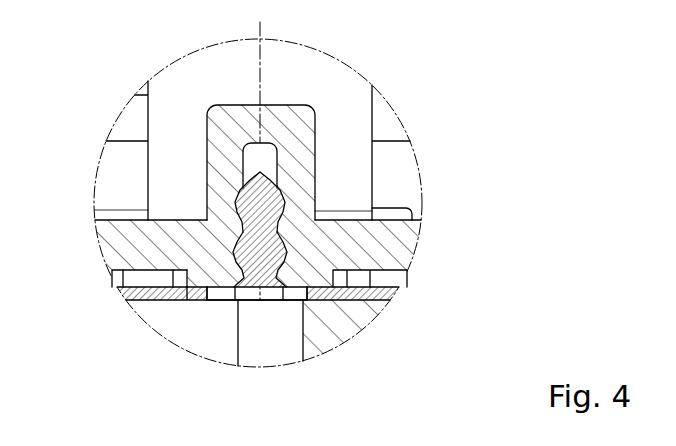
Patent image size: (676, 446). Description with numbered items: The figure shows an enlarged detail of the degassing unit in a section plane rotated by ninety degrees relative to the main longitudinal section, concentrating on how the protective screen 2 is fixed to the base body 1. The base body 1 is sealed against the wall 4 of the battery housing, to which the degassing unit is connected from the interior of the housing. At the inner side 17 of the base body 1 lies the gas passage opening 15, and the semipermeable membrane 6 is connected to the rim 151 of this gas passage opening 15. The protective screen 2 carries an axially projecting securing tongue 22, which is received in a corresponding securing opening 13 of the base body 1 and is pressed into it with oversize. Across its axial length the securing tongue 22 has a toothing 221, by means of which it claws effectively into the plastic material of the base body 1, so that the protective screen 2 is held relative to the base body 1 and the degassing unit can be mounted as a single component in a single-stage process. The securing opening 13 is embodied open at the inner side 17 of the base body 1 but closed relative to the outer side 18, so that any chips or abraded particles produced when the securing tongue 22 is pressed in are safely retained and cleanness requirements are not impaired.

The base body 1 is at (416, 241).
The protective screen 2 is at (216, 309).
The wall of the battery housing 4 is at (333, 350).
The semipermeable membrane 6 is at (181, 297).
The securing opening 13 is at (235, 157).
The gas passage opening 15 is at (135, 298).
The inner side of the base body 17 is at (106, 277).
The outer side of the base body 18 is at (286, 88).
The securing tongue 22 is at (305, 287).
The rim of the gas passage opening 151 is at (205, 303).
The toothing 221 is at (285, 200).